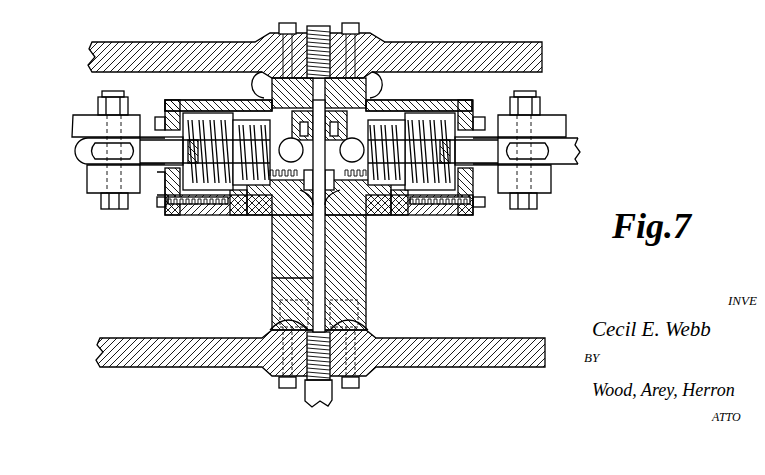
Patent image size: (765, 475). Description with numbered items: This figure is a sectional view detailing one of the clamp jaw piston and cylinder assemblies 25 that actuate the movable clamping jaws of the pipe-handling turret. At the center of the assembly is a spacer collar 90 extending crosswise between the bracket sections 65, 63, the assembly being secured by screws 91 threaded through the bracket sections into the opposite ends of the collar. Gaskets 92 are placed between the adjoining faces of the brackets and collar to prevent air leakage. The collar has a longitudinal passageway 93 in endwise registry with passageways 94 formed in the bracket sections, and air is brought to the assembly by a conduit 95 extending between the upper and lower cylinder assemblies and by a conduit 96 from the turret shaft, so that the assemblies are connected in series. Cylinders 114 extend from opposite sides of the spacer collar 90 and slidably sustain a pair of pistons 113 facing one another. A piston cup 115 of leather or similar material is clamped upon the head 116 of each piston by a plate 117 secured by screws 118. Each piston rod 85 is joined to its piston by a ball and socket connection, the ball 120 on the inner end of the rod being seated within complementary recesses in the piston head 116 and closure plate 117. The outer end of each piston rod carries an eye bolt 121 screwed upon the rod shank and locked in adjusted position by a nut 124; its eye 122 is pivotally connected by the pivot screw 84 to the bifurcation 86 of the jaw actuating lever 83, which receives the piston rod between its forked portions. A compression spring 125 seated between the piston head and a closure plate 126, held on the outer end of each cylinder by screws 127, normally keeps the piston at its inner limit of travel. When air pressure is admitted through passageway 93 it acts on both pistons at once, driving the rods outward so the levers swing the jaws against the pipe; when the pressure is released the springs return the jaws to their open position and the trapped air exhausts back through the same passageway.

The cylinder assembly 25 is at (437, 99).
The plate 63 is at (506, 41).
The bracket section 65 is at (207, 47).
The actuating lever 83 is at (86, 140).
The pivot screw 84 is at (111, 208).
The piston rod 85 is at (150, 142).
The bifurcation 86 is at (103, 182).
The spacer collar 90 is at (367, 270).
The screw 91 is at (288, 23).
The gasket 92 is at (266, 76).
The longitudinal passageway 93 is at (272, 278).
The passageway 94 is at (366, 76).
The conduit 95 is at (318, 27).
The conduit 96 is at (334, 405).
The piston 113 is at (240, 215).
The cylinder 114 is at (200, 215).
The piston cup 115 is at (275, 214).
The piston head 116 is at (266, 104).
The plate 117 is at (318, 143).
The screw 118 is at (367, 245).
The ball 120 is at (318, 164).
The eye bolt 121 is at (155, 178).
The eye 122 is at (92, 164).
The nut 124 is at (190, 149).
The compression spring 125 is at (206, 140).
The closure plate 126 is at (171, 100).
The screw 127 is at (161, 209).